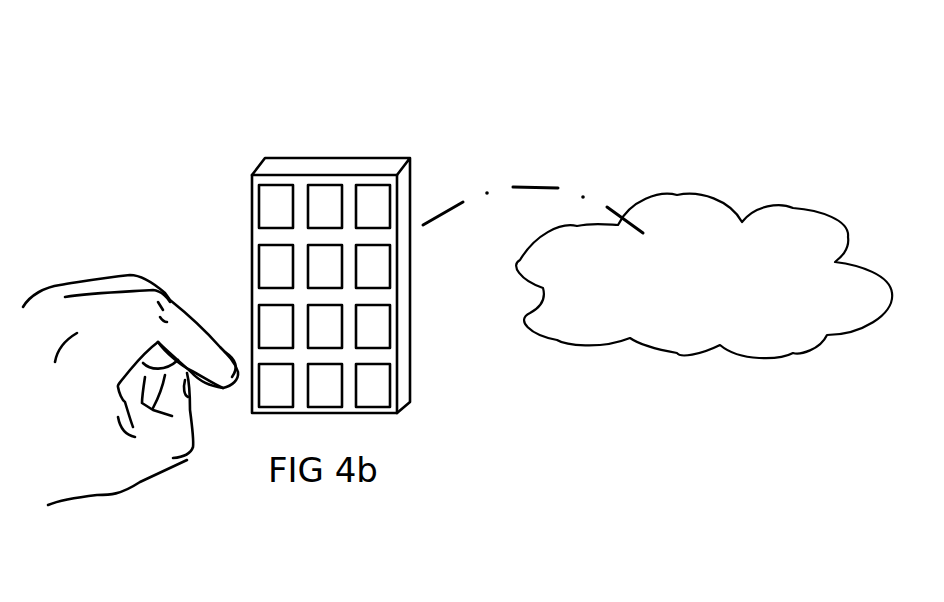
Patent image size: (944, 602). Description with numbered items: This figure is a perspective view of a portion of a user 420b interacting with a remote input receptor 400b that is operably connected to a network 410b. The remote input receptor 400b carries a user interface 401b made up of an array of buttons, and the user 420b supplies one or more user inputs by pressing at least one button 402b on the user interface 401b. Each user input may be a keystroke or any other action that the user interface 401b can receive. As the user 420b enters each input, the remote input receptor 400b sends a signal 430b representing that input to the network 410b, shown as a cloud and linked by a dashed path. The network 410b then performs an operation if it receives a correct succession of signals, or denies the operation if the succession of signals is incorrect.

The remote input receptor 400b is at (280, 167).
The user interface 401b is at (331, 198).
The button 402b is at (370, 213).
The network 410b is at (704, 276).
The user 420b is at (88, 455).
The signal 430b is at (560, 187).